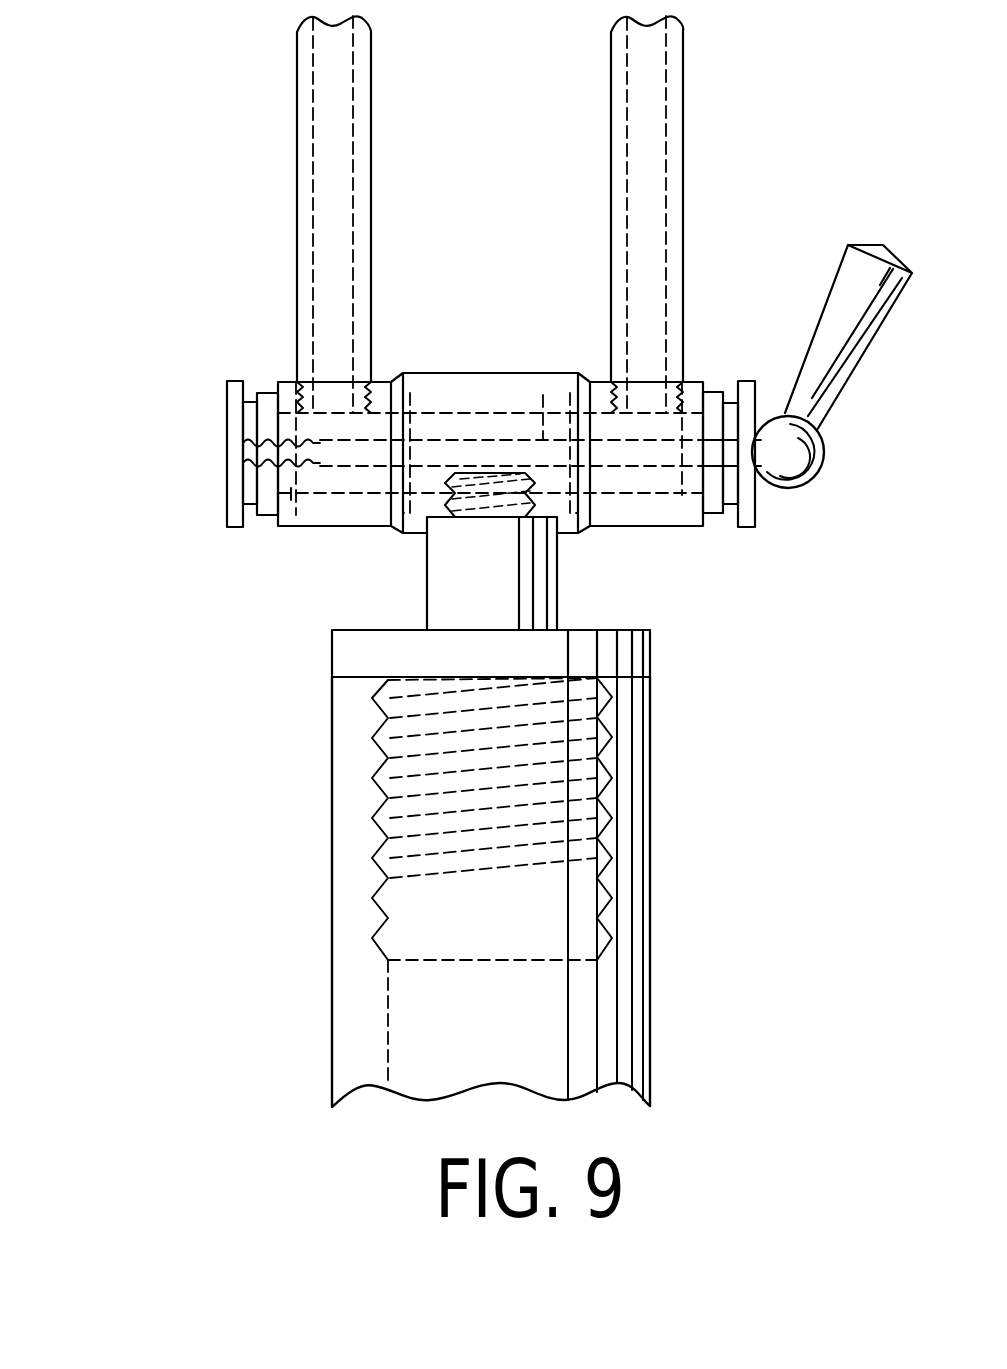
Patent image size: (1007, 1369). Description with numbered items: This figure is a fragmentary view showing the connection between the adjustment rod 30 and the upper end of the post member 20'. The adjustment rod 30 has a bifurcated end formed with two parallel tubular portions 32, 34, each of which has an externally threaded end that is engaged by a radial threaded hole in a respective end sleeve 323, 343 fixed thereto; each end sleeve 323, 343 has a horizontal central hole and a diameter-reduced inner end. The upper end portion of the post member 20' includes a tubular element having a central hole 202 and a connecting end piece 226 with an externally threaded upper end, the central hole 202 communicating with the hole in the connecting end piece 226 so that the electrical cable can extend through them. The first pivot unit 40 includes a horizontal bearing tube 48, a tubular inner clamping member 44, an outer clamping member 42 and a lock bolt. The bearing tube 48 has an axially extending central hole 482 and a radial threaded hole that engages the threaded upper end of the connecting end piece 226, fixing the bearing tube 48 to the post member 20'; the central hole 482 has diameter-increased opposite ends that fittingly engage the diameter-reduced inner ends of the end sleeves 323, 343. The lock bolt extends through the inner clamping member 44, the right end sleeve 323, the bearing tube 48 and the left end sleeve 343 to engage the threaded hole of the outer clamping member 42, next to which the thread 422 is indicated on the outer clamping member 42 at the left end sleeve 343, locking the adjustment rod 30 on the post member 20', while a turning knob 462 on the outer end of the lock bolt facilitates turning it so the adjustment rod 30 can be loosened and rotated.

The post member 20' is at (577, 812).
The central hole 202 is at (535, 920).
The connecting end piece 226 is at (640, 655).
The adjustment rod 30 is at (520, 214).
The tubular portion 32 is at (612, 165).
The tubular portion 34 is at (300, 158).
The first pivot unit 40 is at (482, 405).
The outer clamping member 42 is at (227, 405).
The thread 422 is at (288, 550).
The inner clamping member 44 is at (752, 505).
The turning knob 462 is at (813, 372).
The bearing tube 48 is at (493, 393).
The central hole 482 is at (543, 440).
The end sleeve 343 is at (337, 528).
The end sleeve 323 is at (643, 527).